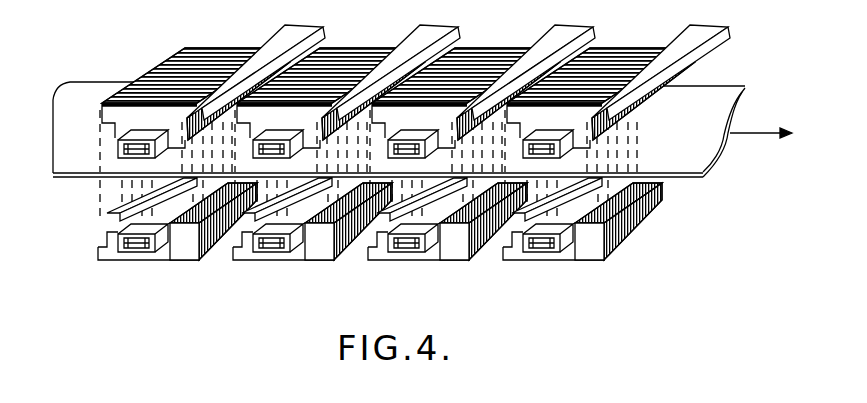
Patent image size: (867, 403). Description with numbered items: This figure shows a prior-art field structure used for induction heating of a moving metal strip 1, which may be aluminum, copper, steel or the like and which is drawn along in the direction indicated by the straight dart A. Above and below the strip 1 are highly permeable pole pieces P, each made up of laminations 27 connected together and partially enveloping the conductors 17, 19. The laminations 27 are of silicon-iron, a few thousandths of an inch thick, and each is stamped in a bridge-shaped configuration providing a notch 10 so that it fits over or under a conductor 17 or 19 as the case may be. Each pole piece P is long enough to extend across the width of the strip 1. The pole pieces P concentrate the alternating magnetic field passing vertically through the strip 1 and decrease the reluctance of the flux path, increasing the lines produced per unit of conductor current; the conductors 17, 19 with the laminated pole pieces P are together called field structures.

The moving metal strip 1 is at (68, 158).
The notch 10 is at (166, 150).
The conductor 17 is at (312, 30).
The conductor 19 is at (415, 25).
The laminations 27 is at (157, 82).
The pole piece P is at (220, 63).
The straight dart A is at (755, 132).